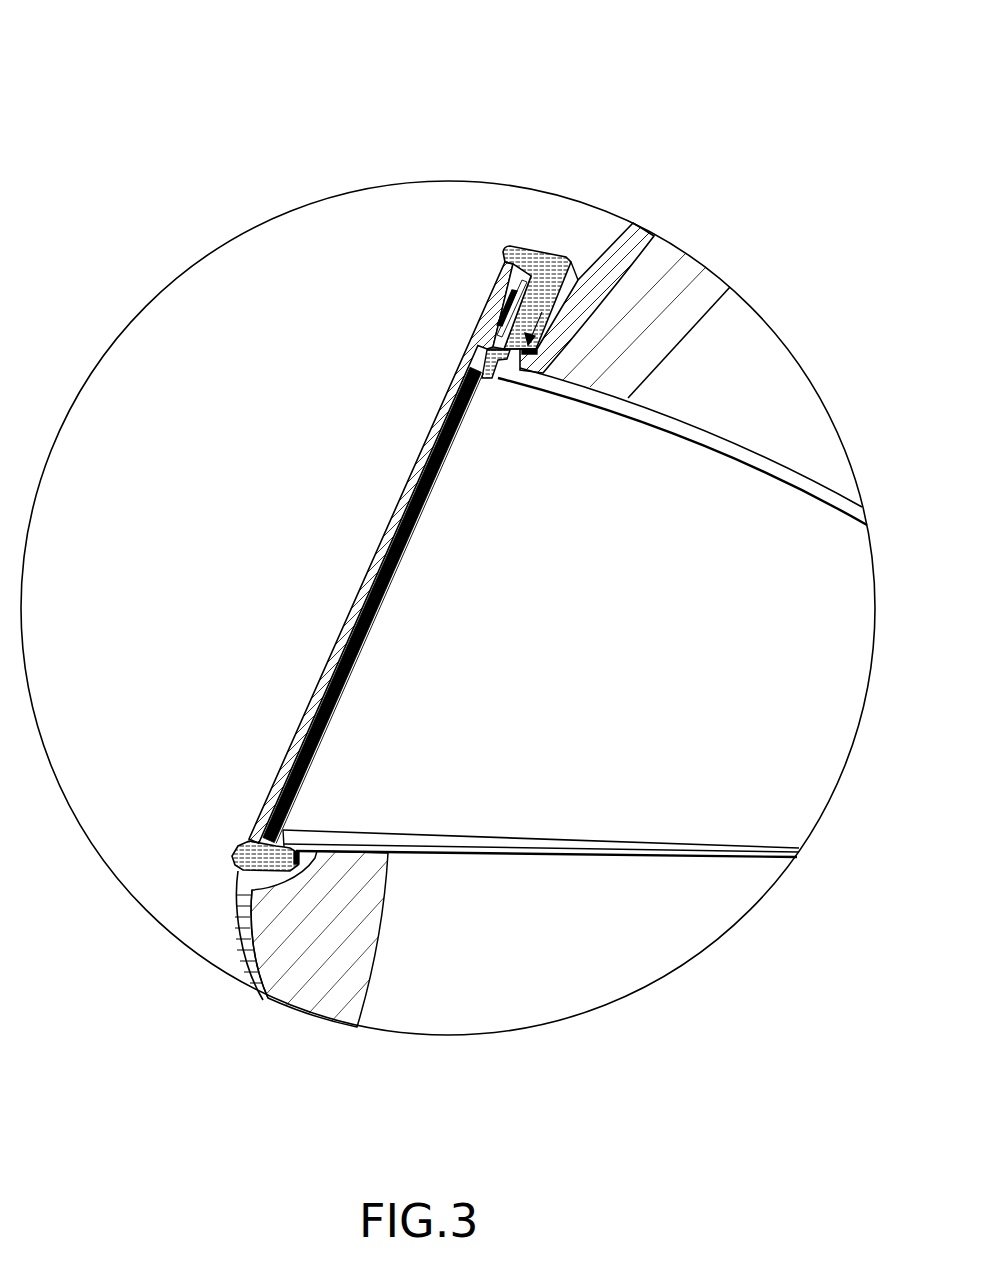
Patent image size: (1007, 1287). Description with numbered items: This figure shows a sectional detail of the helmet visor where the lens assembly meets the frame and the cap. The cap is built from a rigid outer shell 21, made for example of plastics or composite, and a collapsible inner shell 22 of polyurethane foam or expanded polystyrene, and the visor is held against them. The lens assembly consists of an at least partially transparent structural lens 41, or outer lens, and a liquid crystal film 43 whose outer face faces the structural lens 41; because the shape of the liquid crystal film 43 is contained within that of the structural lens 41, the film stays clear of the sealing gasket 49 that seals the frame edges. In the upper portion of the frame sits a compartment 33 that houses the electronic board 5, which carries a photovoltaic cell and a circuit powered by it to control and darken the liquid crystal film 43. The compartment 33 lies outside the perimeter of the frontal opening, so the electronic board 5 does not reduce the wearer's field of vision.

The electronic board 5 is at (500, 298).
The rigid outer shell 21 is at (637, 247).
The collapsible inner shell 22 is at (680, 277).
The compartment 33 is at (520, 247).
The structural lens 41 is at (340, 620).
The liquid crystal film 43 is at (328, 711).
The sealing gasket 49 is at (550, 262).